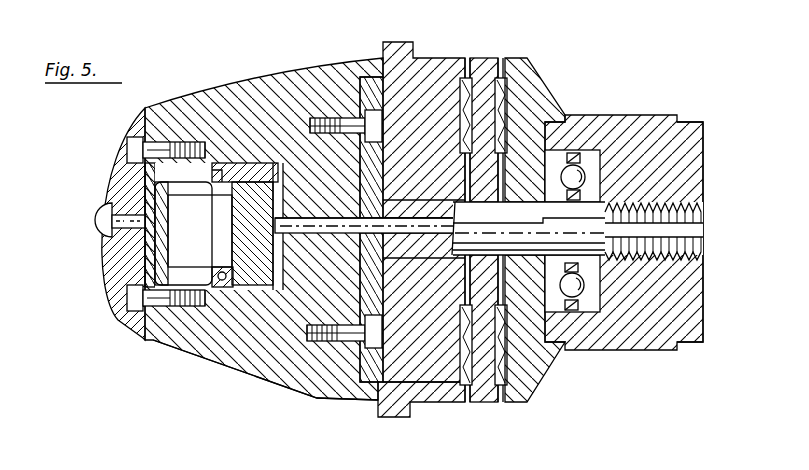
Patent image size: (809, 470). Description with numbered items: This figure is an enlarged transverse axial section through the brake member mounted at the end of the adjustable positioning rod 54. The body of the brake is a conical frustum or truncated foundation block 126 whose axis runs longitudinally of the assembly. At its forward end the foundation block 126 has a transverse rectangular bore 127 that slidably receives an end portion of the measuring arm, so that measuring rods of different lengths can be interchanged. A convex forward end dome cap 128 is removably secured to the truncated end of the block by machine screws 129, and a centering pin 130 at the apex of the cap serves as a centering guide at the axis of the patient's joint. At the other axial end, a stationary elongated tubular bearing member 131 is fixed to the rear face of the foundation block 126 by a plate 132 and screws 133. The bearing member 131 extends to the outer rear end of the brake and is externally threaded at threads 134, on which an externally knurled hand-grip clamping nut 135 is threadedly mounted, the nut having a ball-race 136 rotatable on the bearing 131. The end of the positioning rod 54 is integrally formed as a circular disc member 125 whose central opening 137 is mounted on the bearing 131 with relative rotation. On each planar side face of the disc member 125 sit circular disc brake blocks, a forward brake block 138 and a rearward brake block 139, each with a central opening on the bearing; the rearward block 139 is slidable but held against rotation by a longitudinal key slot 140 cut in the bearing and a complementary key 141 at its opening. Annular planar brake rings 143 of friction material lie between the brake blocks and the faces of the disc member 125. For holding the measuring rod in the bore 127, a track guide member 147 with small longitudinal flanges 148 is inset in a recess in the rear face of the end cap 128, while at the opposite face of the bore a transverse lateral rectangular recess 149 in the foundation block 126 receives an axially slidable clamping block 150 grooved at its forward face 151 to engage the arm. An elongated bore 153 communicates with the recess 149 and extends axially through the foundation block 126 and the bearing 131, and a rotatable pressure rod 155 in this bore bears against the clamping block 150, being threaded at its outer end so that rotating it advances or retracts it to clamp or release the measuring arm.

The adjustable positioning rod 54 is at (485, 395).
The circular disc member 125 is at (483, 62).
The foundation block 126 is at (282, 80).
The transverse rectangular bore 127 is at (192, 268).
The forward end dome cap 128 is at (112, 182).
The machine screws 129 is at (128, 147).
The centering pin 130 is at (96, 220).
The bearing member 131 is at (437, 170).
The plate 132 is at (372, 82).
The screws 133 is at (330, 112).
The threads 134 is at (693, 247).
The hand-grip clamping nut 135 is at (674, 350).
The ball-race 136 is at (595, 308).
The central opening 137 is at (476, 206).
The forward brake block 138 is at (420, 370).
The rearward brake block 139 is at (538, 373).
The longitudinal key slot 140 is at (692, 232).
The key 141 is at (520, 231).
The annular planar brake rings 143 is at (502, 118).
The track guide member 147 is at (140, 255).
The longitudinal flanges 148 is at (170, 188).
The transverse lateral rectangular recess 149 is at (236, 163).
The clamping block 150 is at (257, 242).
The forward face 151 is at (228, 283).
The elongated bore 153 is at (308, 235).
The pressure rod 155 is at (313, 218).